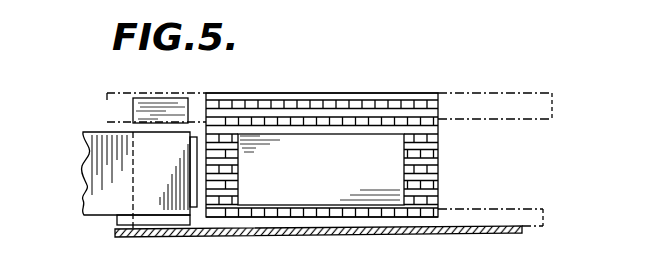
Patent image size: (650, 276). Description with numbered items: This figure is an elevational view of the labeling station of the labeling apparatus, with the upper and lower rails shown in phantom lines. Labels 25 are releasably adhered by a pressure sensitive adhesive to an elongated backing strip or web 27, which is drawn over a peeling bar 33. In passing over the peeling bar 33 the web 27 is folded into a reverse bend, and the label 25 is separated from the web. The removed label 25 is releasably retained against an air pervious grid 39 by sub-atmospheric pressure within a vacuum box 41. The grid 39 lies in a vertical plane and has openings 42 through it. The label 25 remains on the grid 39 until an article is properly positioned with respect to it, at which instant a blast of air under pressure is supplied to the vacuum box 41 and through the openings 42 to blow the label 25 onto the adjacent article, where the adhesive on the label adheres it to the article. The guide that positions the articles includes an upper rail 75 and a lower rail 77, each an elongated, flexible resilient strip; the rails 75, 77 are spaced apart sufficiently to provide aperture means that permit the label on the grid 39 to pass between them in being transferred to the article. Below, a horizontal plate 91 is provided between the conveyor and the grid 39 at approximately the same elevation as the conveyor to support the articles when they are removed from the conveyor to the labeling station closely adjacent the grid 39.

The label 25 is at (300, 212).
The backing strip or web 27 is at (95, 188).
The peeling bar 33 is at (133, 104).
The air pervious grid 39 is at (334, 159).
The vacuum box 41 is at (339, 93).
The openings 42 is at (420, 100).
The upper rail 75 is at (494, 93).
The lower rail 77 is at (500, 209).
The horizontal plate 91 is at (188, 237).